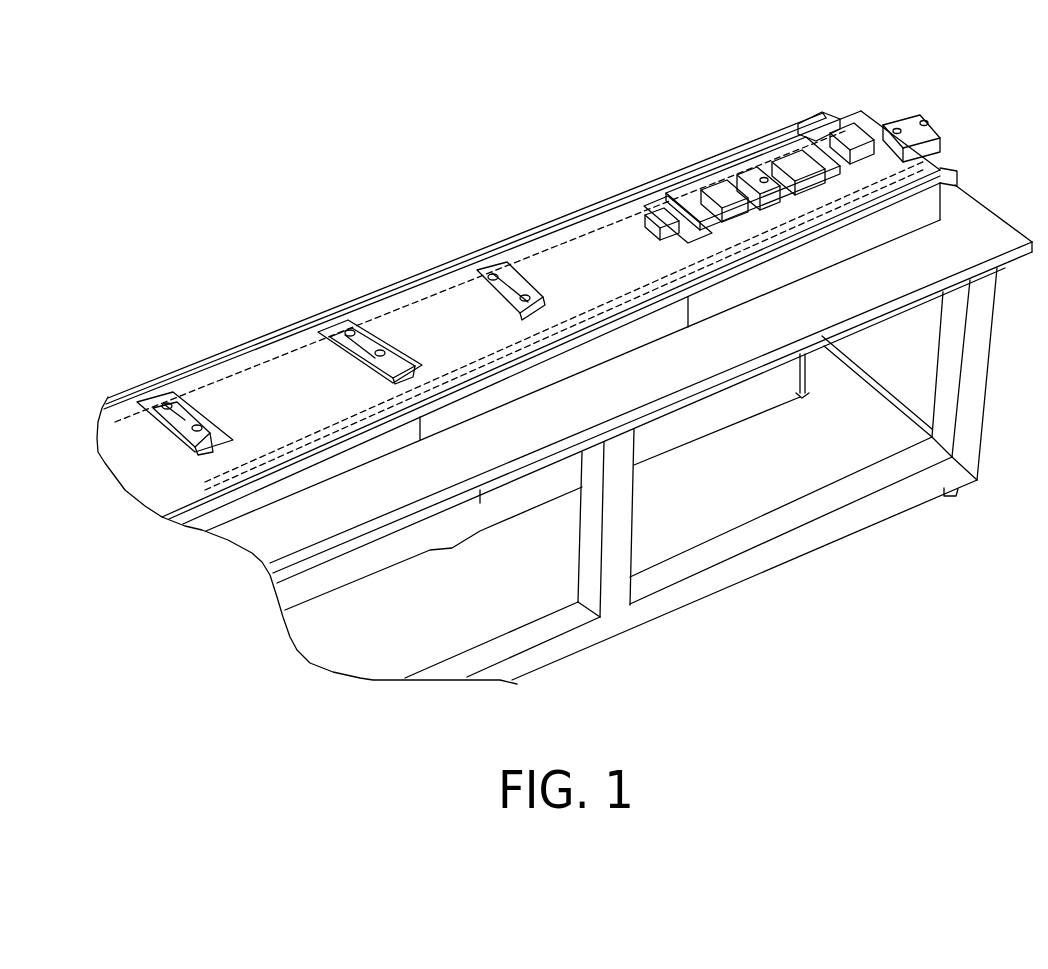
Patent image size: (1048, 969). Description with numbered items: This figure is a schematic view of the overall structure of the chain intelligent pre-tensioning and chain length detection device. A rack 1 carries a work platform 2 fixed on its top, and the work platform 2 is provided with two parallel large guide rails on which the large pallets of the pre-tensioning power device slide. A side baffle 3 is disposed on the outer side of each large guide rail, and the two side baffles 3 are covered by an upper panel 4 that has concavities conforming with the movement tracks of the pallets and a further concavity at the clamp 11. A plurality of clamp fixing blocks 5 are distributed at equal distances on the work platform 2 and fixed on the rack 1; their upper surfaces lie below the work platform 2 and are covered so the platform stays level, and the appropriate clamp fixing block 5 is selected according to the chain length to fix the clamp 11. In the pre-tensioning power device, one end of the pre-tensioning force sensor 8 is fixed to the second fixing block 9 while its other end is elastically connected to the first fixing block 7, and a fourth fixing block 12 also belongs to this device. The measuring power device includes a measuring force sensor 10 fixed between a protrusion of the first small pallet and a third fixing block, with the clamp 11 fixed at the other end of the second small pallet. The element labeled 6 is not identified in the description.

The rack 1 is at (625, 512).
The work platform 2 is at (640, 380).
The side baffle 3 is at (347, 460).
The upper panel 4 is at (423, 325).
The clamp fixing block 5 is at (483, 260).
The drive module 6 is at (910, 113).
The first fixing block 7 is at (866, 124).
The pre-tensioning force sensor 8 is at (805, 127).
The second fixing block 9 is at (800, 172).
The measuring force sensor 10 is at (815, 183).
The clamp 11 is at (757, 183).
The fourth fixing block 12 is at (667, 190).